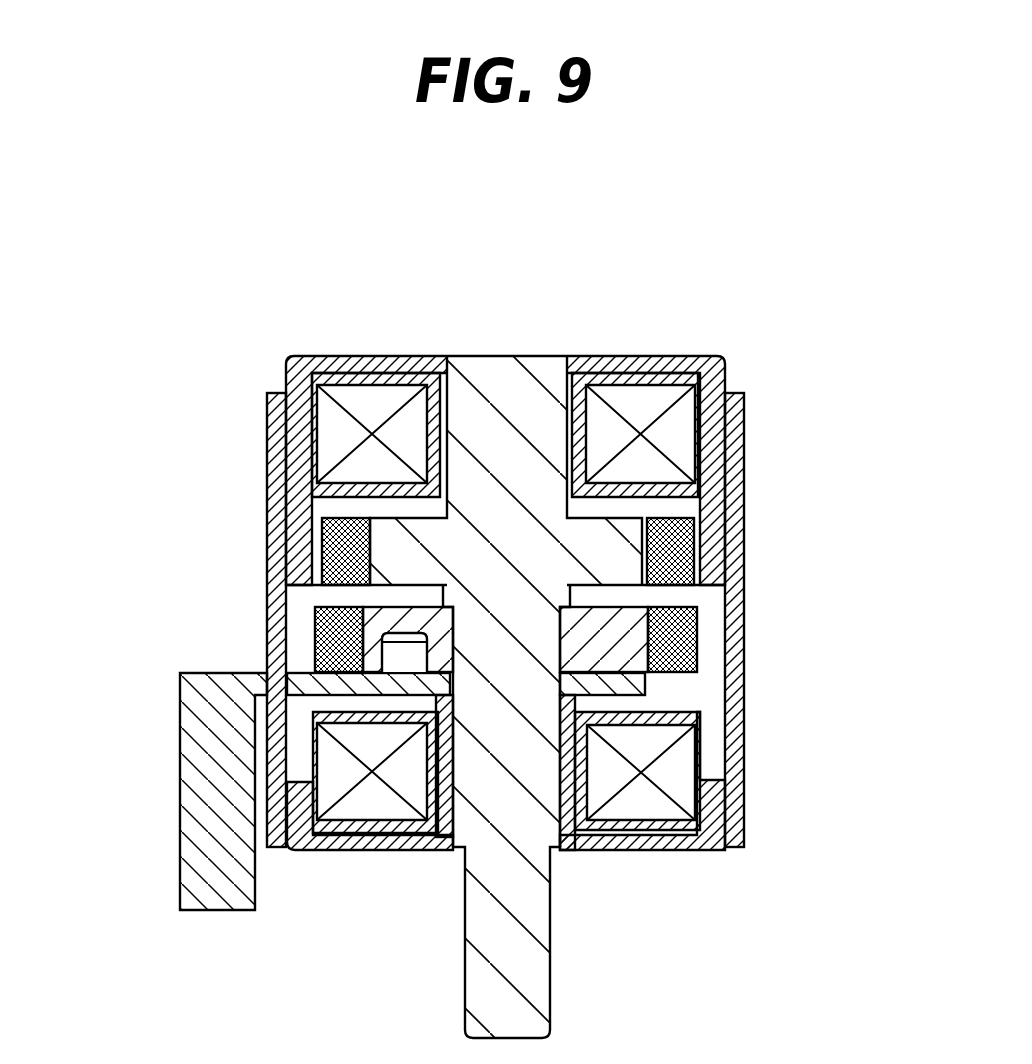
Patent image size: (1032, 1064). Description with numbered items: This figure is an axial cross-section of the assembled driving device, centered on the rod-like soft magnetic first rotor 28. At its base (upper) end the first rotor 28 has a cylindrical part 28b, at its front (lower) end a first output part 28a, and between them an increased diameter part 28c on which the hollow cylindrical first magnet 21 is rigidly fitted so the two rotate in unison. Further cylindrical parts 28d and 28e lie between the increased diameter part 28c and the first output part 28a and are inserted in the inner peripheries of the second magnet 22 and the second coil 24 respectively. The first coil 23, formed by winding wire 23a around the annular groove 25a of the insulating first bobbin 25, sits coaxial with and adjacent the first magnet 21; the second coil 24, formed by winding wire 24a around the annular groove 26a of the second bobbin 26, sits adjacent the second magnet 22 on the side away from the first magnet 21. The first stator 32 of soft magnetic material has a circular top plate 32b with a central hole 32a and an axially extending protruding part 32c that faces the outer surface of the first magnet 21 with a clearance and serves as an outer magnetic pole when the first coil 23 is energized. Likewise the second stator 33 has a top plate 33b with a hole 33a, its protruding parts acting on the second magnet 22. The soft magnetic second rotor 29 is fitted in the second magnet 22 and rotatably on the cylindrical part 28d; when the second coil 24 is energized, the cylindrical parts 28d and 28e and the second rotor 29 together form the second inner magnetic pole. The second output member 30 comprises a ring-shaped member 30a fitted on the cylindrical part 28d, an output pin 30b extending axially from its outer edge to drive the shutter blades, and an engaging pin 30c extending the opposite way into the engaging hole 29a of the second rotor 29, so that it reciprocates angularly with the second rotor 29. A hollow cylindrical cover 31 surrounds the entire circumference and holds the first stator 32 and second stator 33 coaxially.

The first magnet 21 is at (677, 547).
The second magnet 22 is at (590, 683).
The first coil 23 is at (740, 377).
The wire 23a is at (678, 425).
The second coil 24 is at (741, 747).
The wire 24a is at (677, 765).
The first bobbin 25 is at (788, 597).
The annular groove 25a is at (363, 428).
The second bobbin 26 is at (481, 772).
The annular groove 26a is at (433, 776).
The first rotor 28 is at (386, 647).
The first output part 28a is at (530, 1002).
The cylindrical part 28b is at (480, 455).
The increased diameter part 28c is at (398, 548).
The cylindrical part 28d is at (492, 647).
The cylindrical part 28e is at (493, 780).
The second rotor 29 is at (677, 633).
The engaging hole 29a is at (427, 667).
The second output member 30 is at (490, 732).
The ring-shaped member 30a is at (628, 603).
The output pin 30b is at (213, 859).
The engaging pin 30c is at (405, 645).
The cover 31 is at (747, 407).
The first stator 32 is at (490, 412).
The hole 32a is at (463, 358).
The top plate 32b is at (403, 358).
The protruding part 32c is at (713, 495).
The second stator 33 is at (696, 833).
The hole 33a is at (540, 848).
The top plate 33b is at (650, 850).